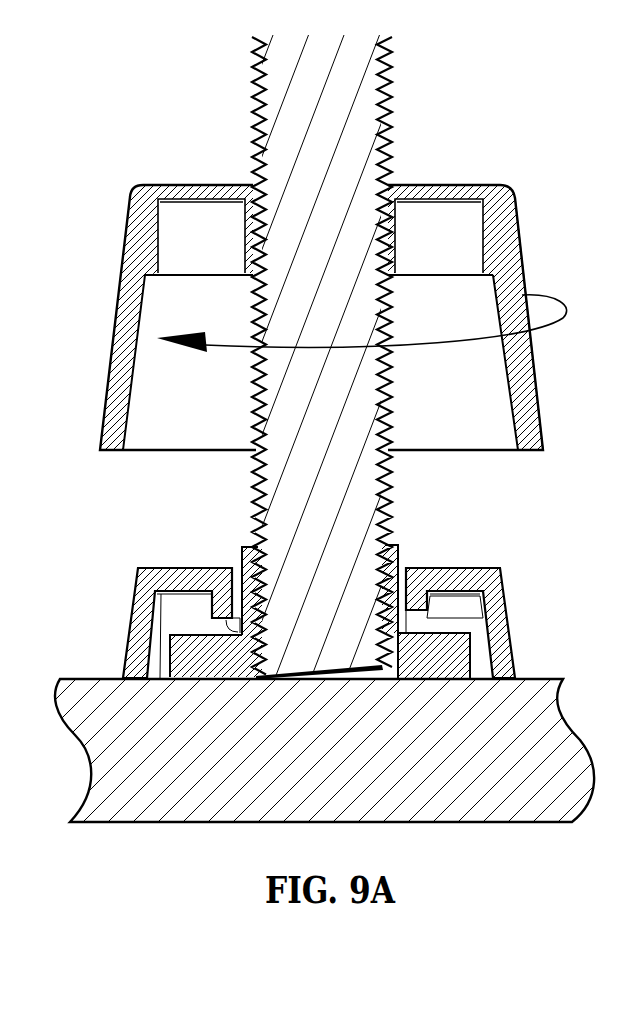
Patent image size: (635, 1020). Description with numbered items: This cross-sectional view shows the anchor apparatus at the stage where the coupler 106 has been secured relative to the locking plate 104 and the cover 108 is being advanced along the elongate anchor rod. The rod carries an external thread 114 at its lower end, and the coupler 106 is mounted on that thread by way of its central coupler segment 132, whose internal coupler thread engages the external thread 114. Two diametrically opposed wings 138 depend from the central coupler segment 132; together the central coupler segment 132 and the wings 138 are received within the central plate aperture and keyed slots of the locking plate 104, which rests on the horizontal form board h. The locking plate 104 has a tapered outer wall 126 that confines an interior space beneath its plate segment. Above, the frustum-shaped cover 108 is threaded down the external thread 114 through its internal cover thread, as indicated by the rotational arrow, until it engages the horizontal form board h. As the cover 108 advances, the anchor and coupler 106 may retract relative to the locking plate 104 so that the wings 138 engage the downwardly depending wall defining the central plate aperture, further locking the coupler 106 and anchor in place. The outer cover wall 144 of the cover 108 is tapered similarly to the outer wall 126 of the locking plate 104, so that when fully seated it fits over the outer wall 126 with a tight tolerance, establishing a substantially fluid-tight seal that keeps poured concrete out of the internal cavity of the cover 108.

The external thread 114 is at (317, 356).
The cover 108 is at (317, 412).
The outer cover wall 144 is at (548, 324).
The coupler 106 is at (317, 430).
The central coupler segment 132 is at (317, 430).
The locking plate 104 is at (317, 430).
The outer wall 126 is at (151, 616).
The wings 138 is at (317, 539).
The horizontal form board h is at (317, 741).